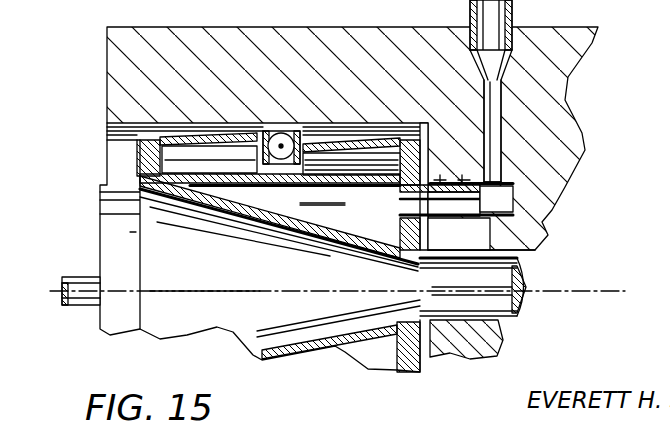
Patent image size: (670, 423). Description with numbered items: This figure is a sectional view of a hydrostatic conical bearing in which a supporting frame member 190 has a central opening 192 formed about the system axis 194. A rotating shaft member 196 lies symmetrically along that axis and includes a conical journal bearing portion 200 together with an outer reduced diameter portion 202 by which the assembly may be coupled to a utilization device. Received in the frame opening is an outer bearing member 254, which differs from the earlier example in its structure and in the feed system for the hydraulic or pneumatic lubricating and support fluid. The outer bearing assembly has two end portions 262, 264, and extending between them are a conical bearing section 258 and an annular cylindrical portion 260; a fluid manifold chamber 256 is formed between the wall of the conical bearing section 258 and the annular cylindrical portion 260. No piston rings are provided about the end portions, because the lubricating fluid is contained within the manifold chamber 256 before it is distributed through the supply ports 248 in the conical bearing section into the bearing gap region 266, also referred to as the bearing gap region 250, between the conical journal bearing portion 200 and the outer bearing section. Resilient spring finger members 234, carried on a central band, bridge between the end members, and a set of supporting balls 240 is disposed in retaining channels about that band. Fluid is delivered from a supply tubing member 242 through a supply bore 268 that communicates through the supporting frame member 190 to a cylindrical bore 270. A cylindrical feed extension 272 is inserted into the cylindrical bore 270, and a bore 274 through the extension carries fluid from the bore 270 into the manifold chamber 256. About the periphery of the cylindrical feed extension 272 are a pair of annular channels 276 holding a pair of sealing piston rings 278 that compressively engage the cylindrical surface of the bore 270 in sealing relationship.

The supporting frame member 190 is at (313, 27).
The supply tubing member 242 is at (513, 16).
The supply bore 268 is at (502, 122).
The cylindrical bore 270 is at (504, 183).
The end portion 264 is at (412, 140).
The bore 274 is at (456, 200).
The sealing piston rings 278 is at (450, 221).
The cylindrical feed extension 272 is at (452, 162).
The annular channels 276 is at (464, 180).
The spring finger members 234 is at (203, 165).
The supporting balls 240 is at (292, 130).
The end portion 262 is at (148, 140).
The conical bearing section 258 is at (252, 187).
The supply ports 248 is at (270, 203).
The bearing gap region 266 is at (204, 193).
The annular cylindrical portion 260 is at (395, 191).
The fluid manifold chamber 256 is at (384, 225).
The outer bearing member 254 is at (128, 152).
The bearing gap region 250 is at (373, 254).
The rotating shaft member 196 is at (485, 289).
The central opening 192 is at (540, 251).
The outer reduced diameter portion 202 is at (72, 280).
The system axis 194 is at (586, 288).
The conical journal bearing portion 200 is at (305, 288).